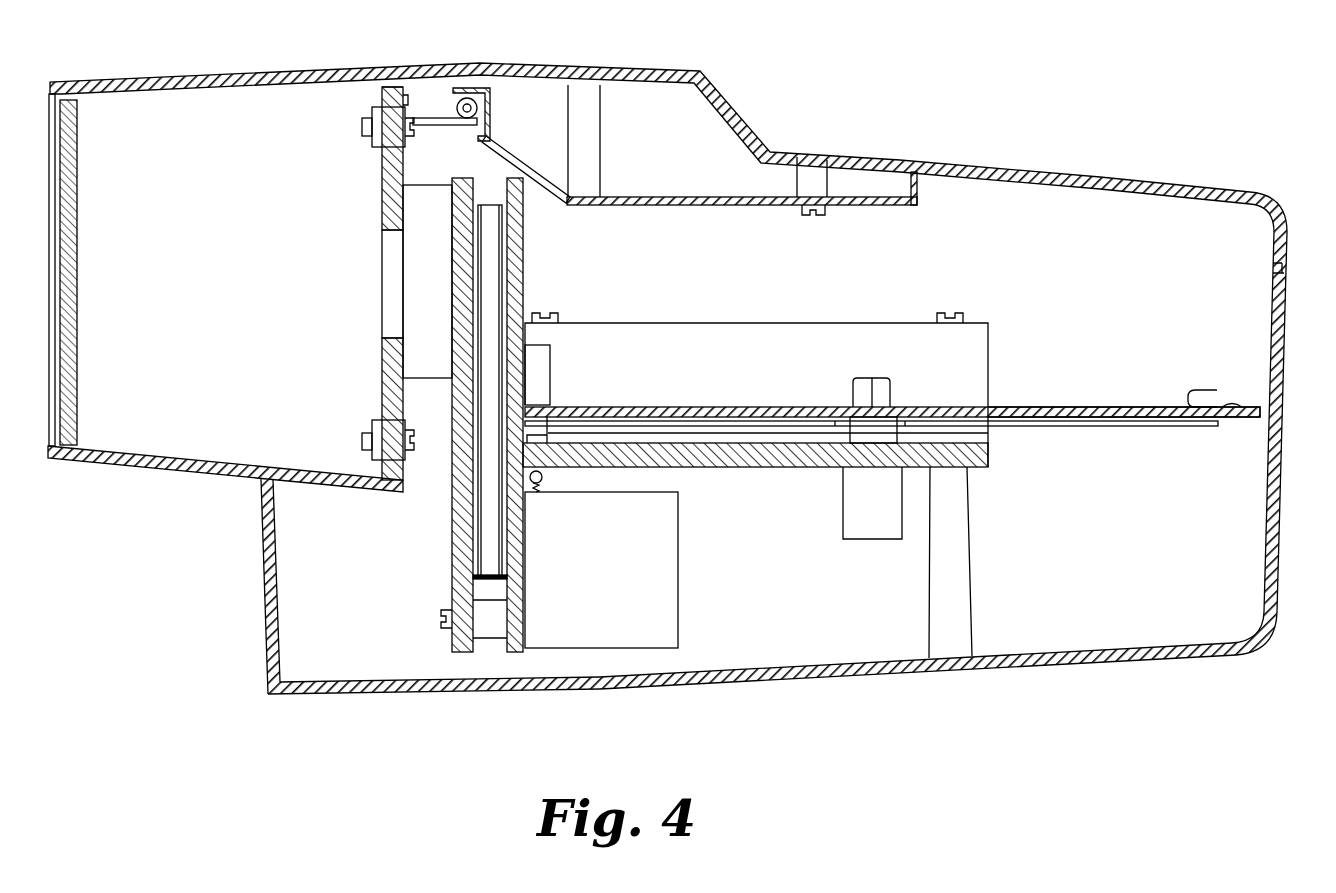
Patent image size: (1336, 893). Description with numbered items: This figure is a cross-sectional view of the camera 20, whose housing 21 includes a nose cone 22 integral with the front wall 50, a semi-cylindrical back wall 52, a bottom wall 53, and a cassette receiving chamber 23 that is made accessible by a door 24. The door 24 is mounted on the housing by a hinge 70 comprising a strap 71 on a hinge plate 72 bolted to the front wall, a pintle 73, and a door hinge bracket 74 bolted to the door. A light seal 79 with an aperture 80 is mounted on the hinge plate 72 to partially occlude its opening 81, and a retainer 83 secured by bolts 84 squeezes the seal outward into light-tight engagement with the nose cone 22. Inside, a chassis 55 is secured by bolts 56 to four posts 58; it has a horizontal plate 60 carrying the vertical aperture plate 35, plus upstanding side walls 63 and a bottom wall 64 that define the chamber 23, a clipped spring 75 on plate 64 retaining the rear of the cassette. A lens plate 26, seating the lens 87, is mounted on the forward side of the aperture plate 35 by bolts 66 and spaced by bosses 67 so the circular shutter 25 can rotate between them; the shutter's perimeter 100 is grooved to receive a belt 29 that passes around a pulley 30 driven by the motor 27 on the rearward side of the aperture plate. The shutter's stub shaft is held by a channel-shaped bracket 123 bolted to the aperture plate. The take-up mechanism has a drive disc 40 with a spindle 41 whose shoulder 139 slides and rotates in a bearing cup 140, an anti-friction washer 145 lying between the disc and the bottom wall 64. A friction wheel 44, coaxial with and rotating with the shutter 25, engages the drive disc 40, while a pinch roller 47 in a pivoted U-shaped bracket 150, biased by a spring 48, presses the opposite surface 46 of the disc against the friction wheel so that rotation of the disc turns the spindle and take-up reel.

The camera 20 is at (686, 427).
The housing 21 is at (735, 683).
The nose cone 22 is at (112, 460).
The cassette receiving chamber 23 is at (998, 272).
The door 24 is at (968, 168).
The circular shutter 25 is at (479, 425).
The lens plate 26 is at (450, 582).
The motor 27 is at (655, 602).
The belt 29 is at (492, 537).
The pulley 30 is at (512, 581).
The aperture plate 35 is at (527, 219).
The drive disc 40 is at (738, 420).
The spindle 41 is at (889, 388).
The friction wheel 44 is at (546, 416).
The opposite surface 46 is at (584, 430).
The pinch roller 47 is at (548, 432).
The spring 48 is at (542, 488).
The front wall 50 is at (262, 570).
The back wall 52 is at (1284, 448).
The bottom wall 53 is at (870, 670).
The chassis 55 is at (975, 384).
The bolts 56 is at (560, 314).
The posts 58 is at (968, 592).
The horizontal plate 60 is at (783, 467).
The side walls 63 is at (767, 338).
The bottom wall 64 is at (1078, 413).
The bolts 66 is at (444, 628).
The bosses 67 is at (490, 642).
The hinge 70 is at (512, 107).
The strap 71 is at (437, 126).
The hinge plate 72 is at (408, 96).
The pintle 73 is at (472, 102).
The door hinge bracket 74 is at (522, 170).
The clipped spring 75 is at (1205, 389).
The light seal 79 is at (382, 200).
The aperture 80 is at (386, 282).
The opening 81 is at (380, 153).
The retainer 83 is at (405, 151).
The bolts 84 is at (413, 120).
The lens 87 is at (425, 281).
The perimeter 100 is at (492, 381).
The channel-shaped bracket 123 is at (551, 358).
The shoulder 139 is at (875, 440).
The bearing cup 140 is at (893, 541).
The anti-friction washer 145 is at (843, 420).
The U-shaped bracket 150 is at (544, 474).